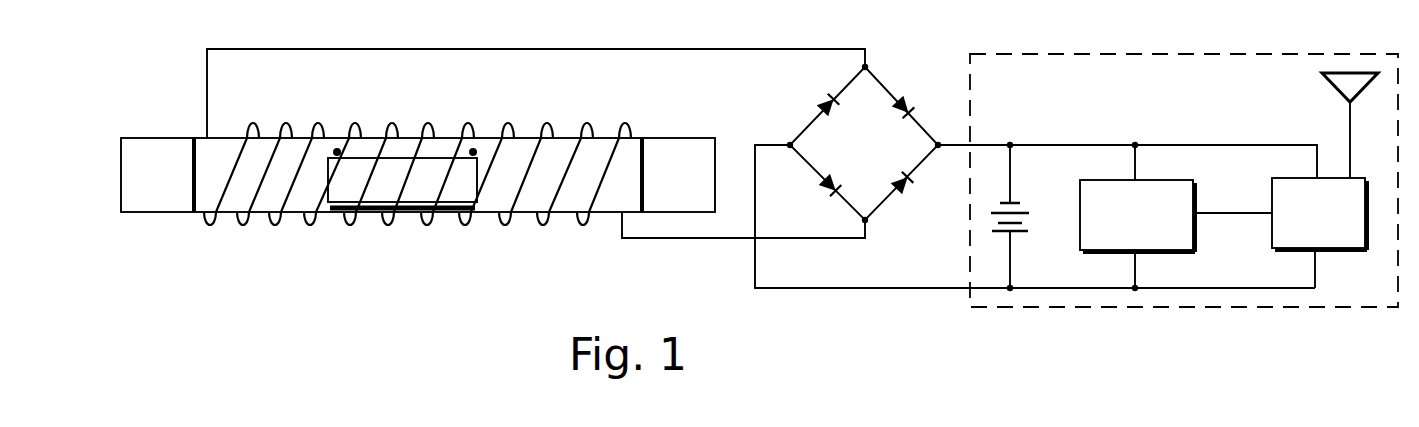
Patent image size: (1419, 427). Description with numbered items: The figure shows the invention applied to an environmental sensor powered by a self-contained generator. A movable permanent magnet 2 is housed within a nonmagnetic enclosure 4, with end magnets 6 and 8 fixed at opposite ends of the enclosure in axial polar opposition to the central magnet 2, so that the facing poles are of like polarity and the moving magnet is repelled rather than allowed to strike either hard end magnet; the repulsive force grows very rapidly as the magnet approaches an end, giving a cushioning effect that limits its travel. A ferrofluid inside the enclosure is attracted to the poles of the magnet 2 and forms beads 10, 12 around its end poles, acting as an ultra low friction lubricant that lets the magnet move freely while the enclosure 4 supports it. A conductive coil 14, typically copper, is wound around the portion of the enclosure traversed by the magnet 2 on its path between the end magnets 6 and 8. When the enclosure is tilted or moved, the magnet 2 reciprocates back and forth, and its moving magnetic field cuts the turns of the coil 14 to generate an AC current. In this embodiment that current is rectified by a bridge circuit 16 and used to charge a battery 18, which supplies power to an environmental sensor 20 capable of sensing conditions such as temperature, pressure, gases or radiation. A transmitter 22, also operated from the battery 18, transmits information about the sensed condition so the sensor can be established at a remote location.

The movable permanent magnet 2 is at (411, 207).
The nonmagnetic enclosure 4 is at (265, 137).
The end magnet 6 is at (171, 203).
The end magnet 8 is at (673, 147).
The ferrofluid bead 10 is at (337, 152).
The ferrofluid bead 12 is at (473, 152).
The conductive coil 14 is at (585, 127).
The bridge circuit 16 is at (878, 153).
The battery 18 is at (1028, 200).
The environmental sensor 20 is at (1200, 186).
The transmitter 22 is at (1285, 249).